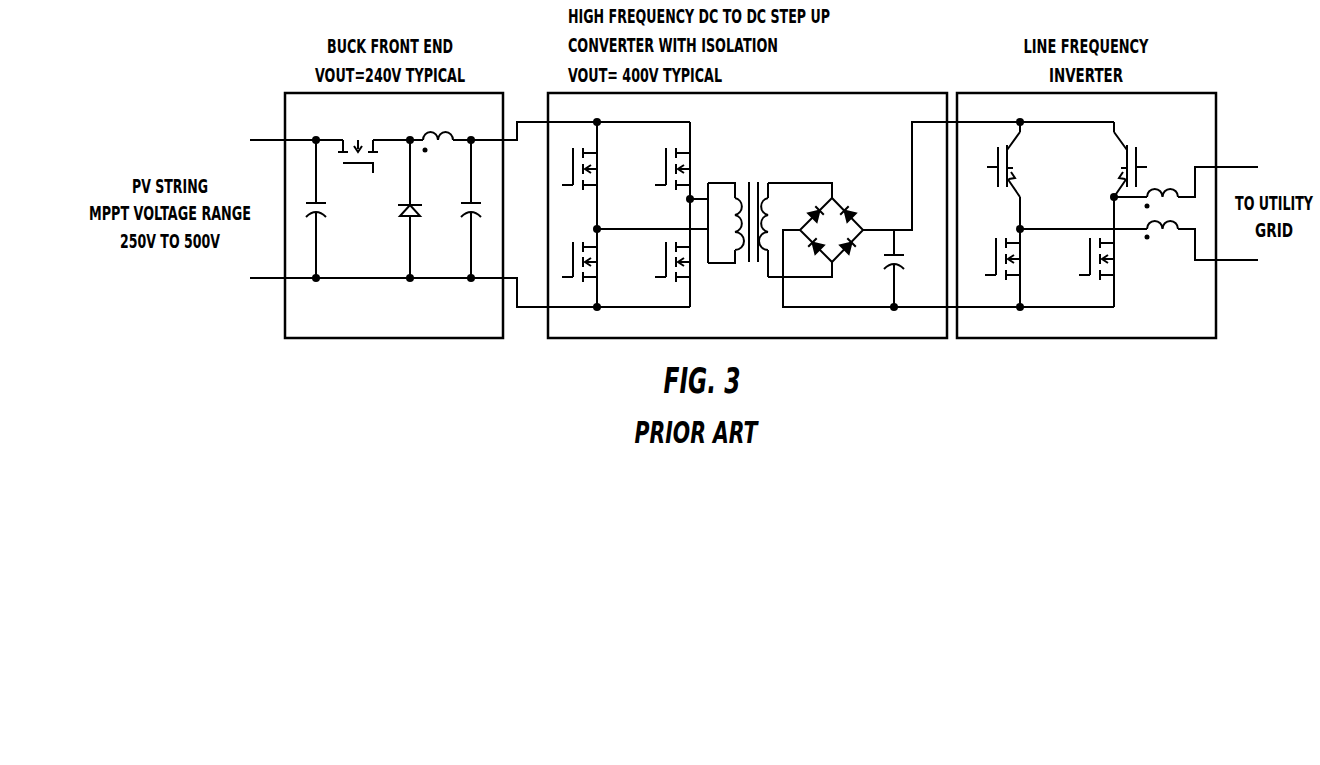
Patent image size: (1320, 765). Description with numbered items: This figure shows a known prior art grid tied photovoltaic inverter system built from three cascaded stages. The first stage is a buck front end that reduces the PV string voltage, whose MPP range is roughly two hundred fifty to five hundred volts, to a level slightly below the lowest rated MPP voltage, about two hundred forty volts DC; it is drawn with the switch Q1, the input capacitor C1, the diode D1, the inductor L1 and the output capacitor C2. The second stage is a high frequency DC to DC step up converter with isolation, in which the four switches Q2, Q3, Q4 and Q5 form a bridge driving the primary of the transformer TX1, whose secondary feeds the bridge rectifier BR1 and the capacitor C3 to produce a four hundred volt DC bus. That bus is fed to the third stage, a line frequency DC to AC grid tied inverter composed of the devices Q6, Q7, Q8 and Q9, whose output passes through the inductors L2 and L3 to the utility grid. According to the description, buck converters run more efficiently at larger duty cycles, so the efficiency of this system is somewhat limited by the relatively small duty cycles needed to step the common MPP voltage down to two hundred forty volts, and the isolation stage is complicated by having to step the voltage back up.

The buck switch transistor Q1 is at (351, 136).
The input capacitor C1 is at (326, 209).
The buck diode D1 is at (397, 209).
The buck inductor L1 is at (440, 151).
The buck output capacitor C2 is at (472, 209).
The full bridge transistor Q2 is at (576, 183).
The full bridge transistor Q3 is at (576, 273).
The full bridge transistor Q4 is at (668, 273).
The full bridge transistor Q5 is at (668, 183).
The isolation transformer TX1 is at (770, 206).
The bridge rectifier BR1 is at (849, 230).
The DC link capacitor C3 is at (885, 269).
The inverter transistor Q6 is at (999, 272).
The inverter IGBT Q7 is at (1018, 164).
The inverter IGBT Q8 is at (1118, 164).
The inverter transistor Q9 is at (1093, 272).
The output filter inductor L2 is at (1167, 177).
The output filter inductor L3 is at (1162, 244).